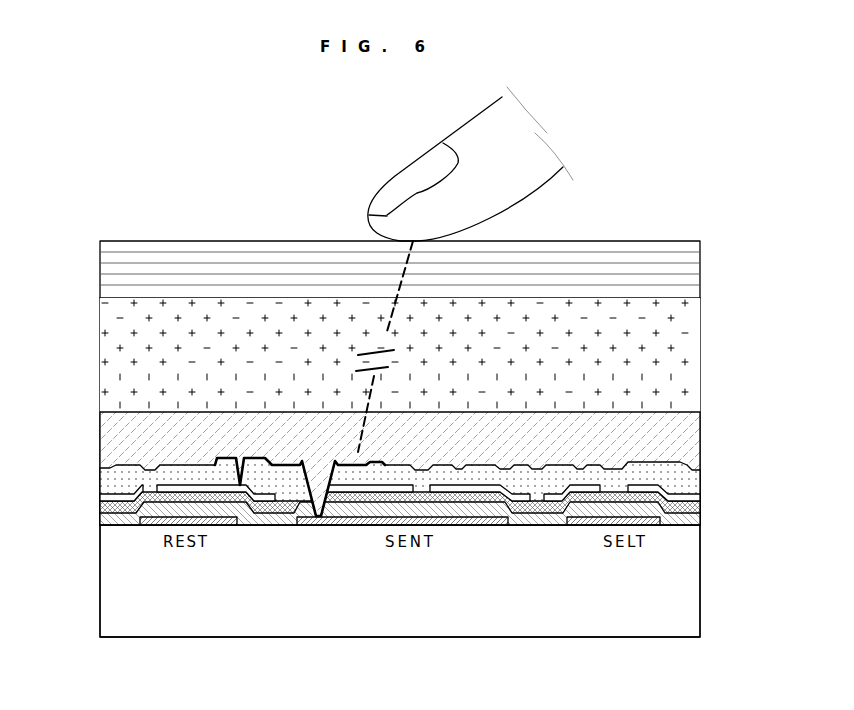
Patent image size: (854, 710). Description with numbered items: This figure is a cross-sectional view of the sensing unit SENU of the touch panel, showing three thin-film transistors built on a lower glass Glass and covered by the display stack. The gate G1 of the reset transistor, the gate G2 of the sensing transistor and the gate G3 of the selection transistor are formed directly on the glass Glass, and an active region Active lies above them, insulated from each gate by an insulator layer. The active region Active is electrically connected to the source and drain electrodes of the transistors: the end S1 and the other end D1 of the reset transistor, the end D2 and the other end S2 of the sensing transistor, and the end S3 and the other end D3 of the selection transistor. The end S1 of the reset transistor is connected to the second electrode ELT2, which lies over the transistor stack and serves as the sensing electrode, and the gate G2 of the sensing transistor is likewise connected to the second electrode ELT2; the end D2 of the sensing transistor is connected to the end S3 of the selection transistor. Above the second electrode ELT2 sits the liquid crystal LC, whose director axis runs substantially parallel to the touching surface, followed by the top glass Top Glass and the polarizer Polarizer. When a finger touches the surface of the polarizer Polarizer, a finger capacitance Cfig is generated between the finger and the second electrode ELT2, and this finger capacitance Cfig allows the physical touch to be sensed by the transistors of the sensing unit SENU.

The finger capacitance Cfig is at (367, 350).
The sensing unit SENU is at (615, 154).
The end of the sensing transistor D2 is at (523, 482).
The polarizer Polarizer is at (678, 261).
The top glass Top Glass is at (683, 322).
The liquid crystal LC is at (220, 437).
The second electrode ELT2 is at (217, 458).
The end of the selection transistor S3 is at (570, 483).
The other end of the reset transistor D1 is at (138, 485).
The other end of the selection transistor D3 is at (683, 492).
The active region Active is at (130, 512).
The gate of the reset transistor G1 is at (173, 520).
The glass Glass is at (680, 565).
The end of the reset transistor S1 is at (243, 480).
The gate of the sensing transistor G2 is at (338, 525).
The other end of the sensing transistor S2 is at (387, 494).
The gate of the selection transistor G3 is at (585, 525).